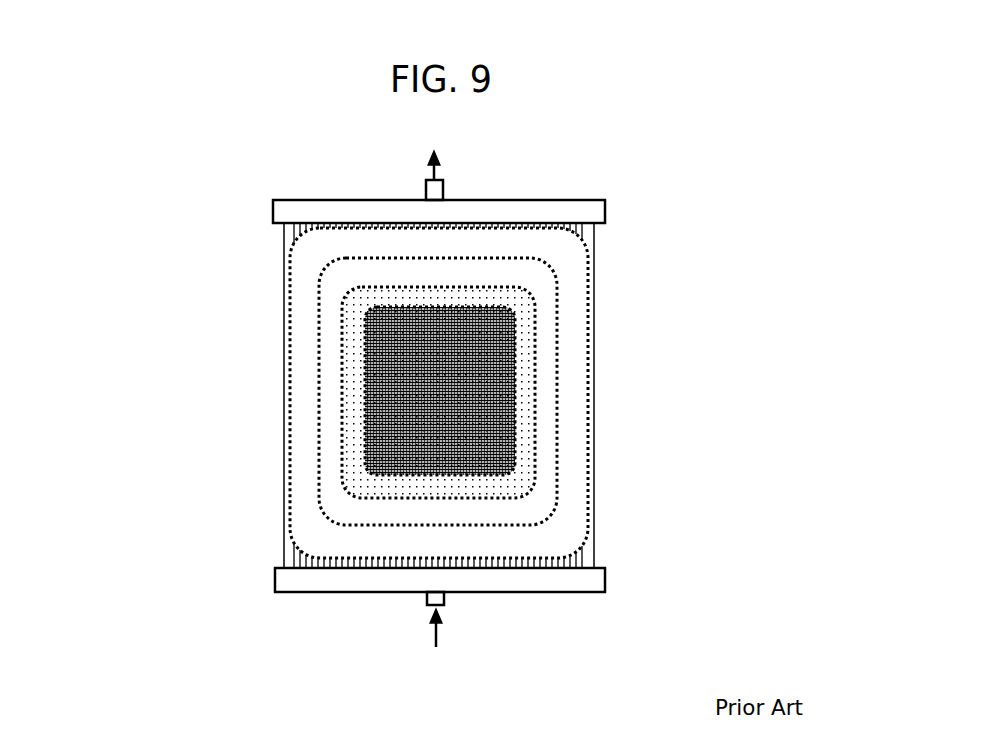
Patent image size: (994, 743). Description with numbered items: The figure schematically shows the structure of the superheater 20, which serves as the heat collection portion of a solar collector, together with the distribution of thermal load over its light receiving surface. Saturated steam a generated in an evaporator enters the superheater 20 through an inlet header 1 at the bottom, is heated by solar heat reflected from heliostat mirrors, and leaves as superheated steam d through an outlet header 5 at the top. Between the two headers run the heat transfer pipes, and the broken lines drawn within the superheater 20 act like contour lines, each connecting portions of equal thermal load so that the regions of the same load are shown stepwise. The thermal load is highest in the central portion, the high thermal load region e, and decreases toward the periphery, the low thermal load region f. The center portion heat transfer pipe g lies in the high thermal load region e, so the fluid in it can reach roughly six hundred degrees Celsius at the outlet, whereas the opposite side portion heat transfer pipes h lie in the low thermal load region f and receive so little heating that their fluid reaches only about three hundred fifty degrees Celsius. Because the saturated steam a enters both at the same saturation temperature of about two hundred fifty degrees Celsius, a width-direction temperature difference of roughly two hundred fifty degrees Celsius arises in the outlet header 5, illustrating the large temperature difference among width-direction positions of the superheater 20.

The inlet header 1 is at (286, 578).
The outlet header 5 is at (303, 212).
The superheater 20 is at (452, 395).
The saturated steam a is at (329, 629).
The superheated steam d is at (559, 165).
The high thermal load region e is at (505, 342).
The low thermal load region f is at (548, 538).
The center portion heat transfer pipe g is at (470, 565).
The opposite side portion heat transfer pipe h is at (643, 543).